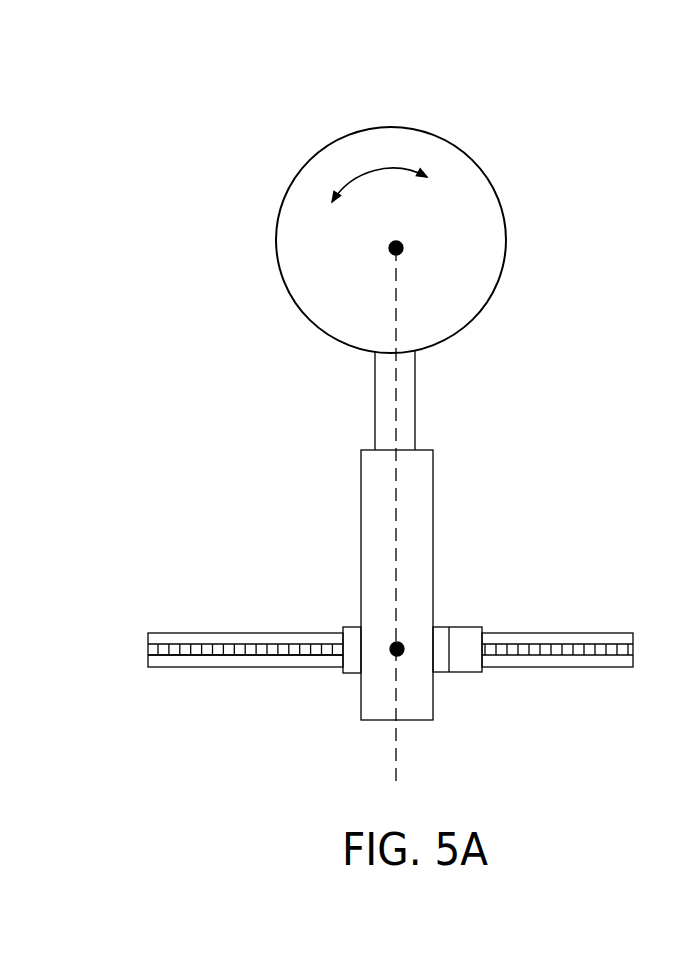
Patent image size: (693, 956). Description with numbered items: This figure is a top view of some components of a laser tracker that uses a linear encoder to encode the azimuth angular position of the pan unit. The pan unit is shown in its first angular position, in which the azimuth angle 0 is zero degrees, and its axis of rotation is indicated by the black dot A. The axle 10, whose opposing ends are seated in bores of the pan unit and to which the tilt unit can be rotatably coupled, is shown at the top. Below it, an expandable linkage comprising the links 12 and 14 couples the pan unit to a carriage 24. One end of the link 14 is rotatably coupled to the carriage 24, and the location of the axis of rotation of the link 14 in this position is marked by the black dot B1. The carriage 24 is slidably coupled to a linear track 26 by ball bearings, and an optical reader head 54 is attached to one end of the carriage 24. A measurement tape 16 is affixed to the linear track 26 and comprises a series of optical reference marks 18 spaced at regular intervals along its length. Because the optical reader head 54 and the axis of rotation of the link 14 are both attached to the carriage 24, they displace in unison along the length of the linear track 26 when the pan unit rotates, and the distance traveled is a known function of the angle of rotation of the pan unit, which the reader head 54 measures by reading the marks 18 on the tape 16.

The axle 10 is at (475, 163).
The axis of rotation of the pan unit A is at (399, 247).
The link 12 is at (414, 412).
The link 14 is at (433, 523).
The carriage 24 is at (353, 625).
The optical reader head 54 is at (473, 625).
The measurement tape 16 is at (195, 643).
The linear track 26 is at (237, 667).
The optical reference marks 18 is at (548, 652).
The axis of rotation of the link B1 is at (397, 655).
The azimuth angle 0 is at (395, 757).